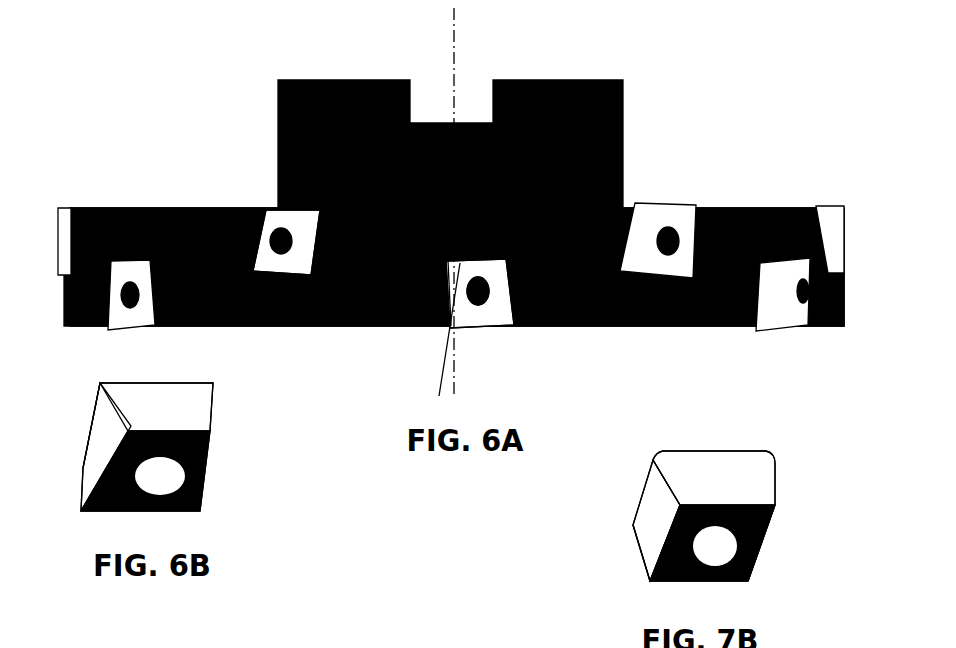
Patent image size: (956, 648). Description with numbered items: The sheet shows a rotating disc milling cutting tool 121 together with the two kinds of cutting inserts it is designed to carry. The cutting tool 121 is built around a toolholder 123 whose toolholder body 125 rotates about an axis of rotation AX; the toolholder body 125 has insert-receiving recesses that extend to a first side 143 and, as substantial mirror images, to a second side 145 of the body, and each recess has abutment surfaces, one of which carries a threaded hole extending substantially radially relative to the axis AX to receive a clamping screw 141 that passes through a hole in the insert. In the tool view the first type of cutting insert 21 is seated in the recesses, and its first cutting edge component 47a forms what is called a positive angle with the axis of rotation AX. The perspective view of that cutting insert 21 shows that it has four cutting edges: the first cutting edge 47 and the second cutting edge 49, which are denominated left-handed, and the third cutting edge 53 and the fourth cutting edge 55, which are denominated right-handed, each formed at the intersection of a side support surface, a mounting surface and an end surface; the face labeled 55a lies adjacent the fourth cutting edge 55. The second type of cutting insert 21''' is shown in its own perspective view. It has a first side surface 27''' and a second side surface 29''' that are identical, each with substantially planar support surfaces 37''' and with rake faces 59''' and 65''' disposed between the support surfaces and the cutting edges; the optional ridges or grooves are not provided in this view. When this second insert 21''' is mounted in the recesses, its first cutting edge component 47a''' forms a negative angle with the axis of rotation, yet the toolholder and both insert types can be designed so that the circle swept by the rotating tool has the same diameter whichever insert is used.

In FIG. 6A, the cutting tool 121 is at (713, 70).
In FIG. 6A, the toolholder 123 is at (713, 193).
In FIG. 6A, the toolholder body 125 is at (730, 250).
In FIG. 6A, the second side of the toolholder body 145 is at (151, 199).
In FIG. 6A, the first side of the toolholder body 143 is at (640, 315).
In FIG. 6A, the clamping screw 141 is at (475, 280).
In FIG. 6A, the cutting insert 21 is at (383, 294).
In FIG. 6A, the first cutting edge component 47a is at (422, 328).
In FIG. 6B, the first cutting edge component 47a is at (86, 482).
In FIG. 6A, the side face 55a is at (246, 223).
In FIG. 6B, the side face 55a is at (193, 448).
In FIG. 6A, the axis of rotation AX is at (450, 45).
In FIG. 6B, the second cutting edge 49 is at (82, 417).
In FIG. 6B, the first cutting edge 47 is at (100, 448).
In FIG. 6B, the third cutting edge 53 is at (212, 388).
In FIG. 6B, the fourth cutting edge 55 is at (197, 482).
In FIG. 7B, the cutting insert 21''' is at (750, 516).
In FIG. 7B, the rake face 65''' is at (714, 463).
In FIG. 7B, the rake face 59''' is at (630, 516).
In FIG. 7B, the support surface 37''' is at (606, 490).
In FIG. 7B, the first side surface 27''' is at (583, 553).
In FIG. 7B, the second side surface 29''' is at (743, 543).
In FIG. 7B, the first cutting edge component 47a''' is at (663, 550).